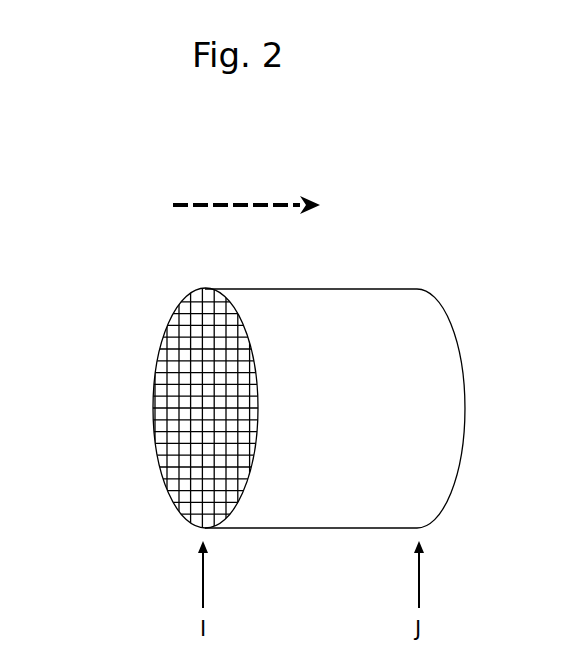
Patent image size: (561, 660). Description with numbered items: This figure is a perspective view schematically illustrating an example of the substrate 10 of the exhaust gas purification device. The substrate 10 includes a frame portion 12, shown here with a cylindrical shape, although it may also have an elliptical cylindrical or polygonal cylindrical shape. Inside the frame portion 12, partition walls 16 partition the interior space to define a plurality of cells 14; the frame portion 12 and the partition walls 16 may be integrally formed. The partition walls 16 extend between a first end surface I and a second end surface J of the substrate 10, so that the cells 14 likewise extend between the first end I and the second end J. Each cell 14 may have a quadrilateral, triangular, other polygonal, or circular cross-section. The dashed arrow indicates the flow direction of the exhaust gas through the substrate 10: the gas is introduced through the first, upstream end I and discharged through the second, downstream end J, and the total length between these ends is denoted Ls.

The substrate 10 is at (416, 232).
The frame portion 12 is at (323, 298).
The cells 14 is at (186, 338).
The partition walls 16 is at (175, 372).